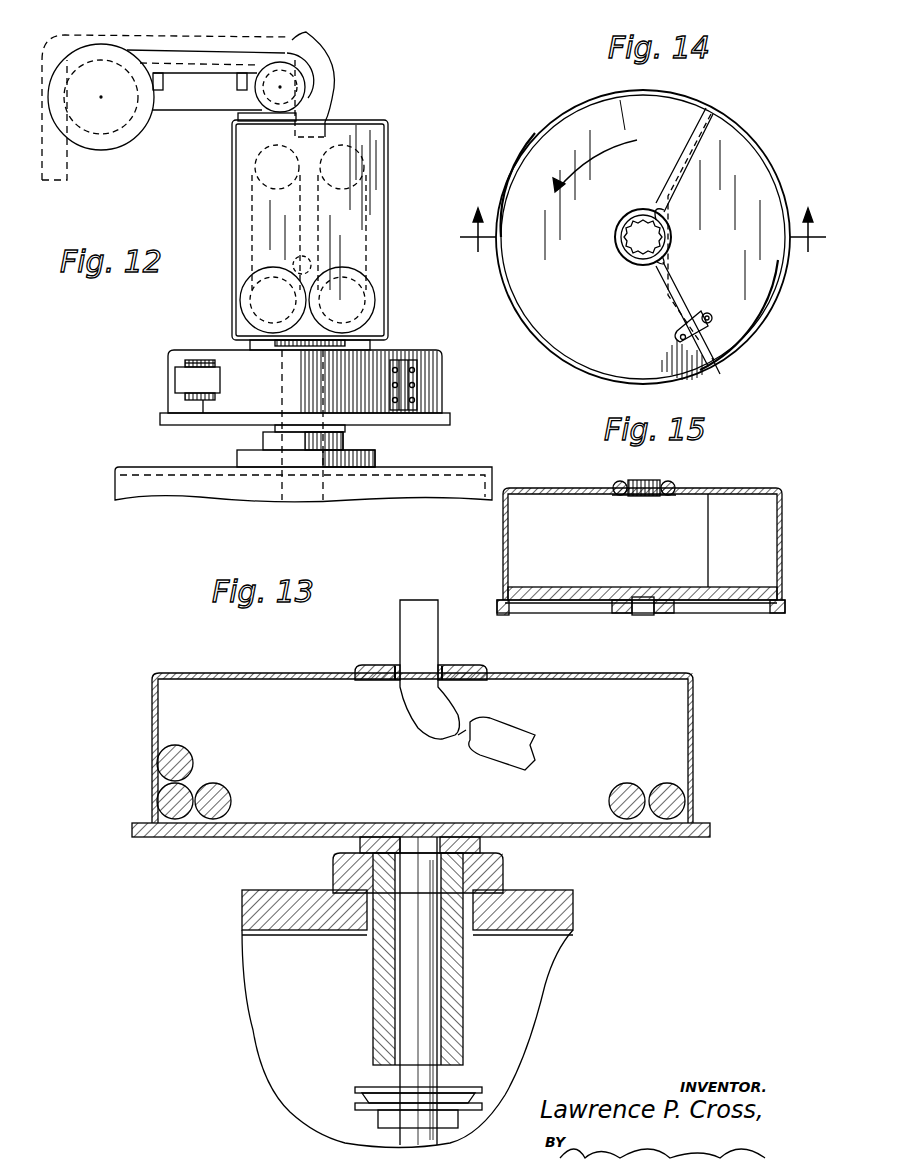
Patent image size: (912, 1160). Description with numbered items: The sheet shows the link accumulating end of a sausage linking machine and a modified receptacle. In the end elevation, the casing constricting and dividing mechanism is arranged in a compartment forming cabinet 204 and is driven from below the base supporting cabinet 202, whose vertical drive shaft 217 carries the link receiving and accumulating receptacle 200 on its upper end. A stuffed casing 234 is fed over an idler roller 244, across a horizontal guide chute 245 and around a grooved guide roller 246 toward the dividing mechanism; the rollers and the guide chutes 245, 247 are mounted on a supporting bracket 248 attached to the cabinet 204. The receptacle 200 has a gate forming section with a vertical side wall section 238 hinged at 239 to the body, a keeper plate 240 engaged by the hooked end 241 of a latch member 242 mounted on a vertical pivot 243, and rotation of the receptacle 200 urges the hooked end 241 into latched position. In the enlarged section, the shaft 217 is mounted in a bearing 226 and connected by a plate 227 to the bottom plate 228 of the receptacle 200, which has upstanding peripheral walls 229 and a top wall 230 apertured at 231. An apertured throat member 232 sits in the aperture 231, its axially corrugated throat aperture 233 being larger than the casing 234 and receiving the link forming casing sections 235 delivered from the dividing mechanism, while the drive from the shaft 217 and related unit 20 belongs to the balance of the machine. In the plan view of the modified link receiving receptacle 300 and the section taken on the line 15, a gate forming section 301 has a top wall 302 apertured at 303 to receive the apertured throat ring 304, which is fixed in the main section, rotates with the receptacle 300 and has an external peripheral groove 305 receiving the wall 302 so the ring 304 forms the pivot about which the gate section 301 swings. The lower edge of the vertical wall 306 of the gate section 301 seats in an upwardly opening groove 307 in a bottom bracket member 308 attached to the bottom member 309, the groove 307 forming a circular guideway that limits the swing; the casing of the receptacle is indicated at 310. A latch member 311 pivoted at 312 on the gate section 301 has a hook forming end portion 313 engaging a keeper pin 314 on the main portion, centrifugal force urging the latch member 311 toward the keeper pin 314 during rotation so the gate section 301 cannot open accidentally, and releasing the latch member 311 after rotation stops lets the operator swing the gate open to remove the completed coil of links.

In FIG. 12, the conveyor unit 20' 20 is at (386, 225).
In FIG. 13, the link receiving and accumulating receptacle 200 is at (588, 690).
In FIG. 12, the base supporting cabinet 202 is at (140, 467).
In FIG. 12, the compartment forming casing or cabinet 204 is at (386, 140).
In FIG. 13, the vertical drive shaft 217 is at (430, 972).
In FIG. 13, the bearing 226 is at (382, 1003).
In FIG. 13, the plate 227 is at (345, 850).
In FIG. 13, the bottom plate 228 is at (242, 837).
In FIG. 13, the upstanding peripheral walls 229 is at (152, 728).
In FIG. 13, the top wall 230 is at (236, 673).
In FIG. 13, the top central aperture 231 is at (382, 686).
In FIG. 13, the apertured throat member 232 is at (363, 665).
In FIG. 13, the throat or aperture 233 is at (448, 665).
In FIG. 12, the stuffed casing 234 is at (68, 177).
In FIG. 13, the link forming casing sections 235 is at (426, 604).
In FIG. 12, the vertical side wall section 238 is at (378, 365).
In FIG. 12, the hinge connection 239 is at (418, 380).
In FIG. 12, the keeper plate 240 is at (204, 360).
In FIG. 12, the hooked end 241 is at (215, 385).
In FIG. 12, the latch member 242 is at (180, 383).
In FIG. 12, the vertical pivot 243 is at (185, 363).
In FIG. 12, the idler roller 244 is at (130, 128).
In FIG. 12, the horizontal guide chute 245 is at (202, 52).
In FIG. 12, the grooved guide roller 246 is at (307, 67).
In FIG. 12, the guide chute 247 is at (332, 92).
In FIG. 12, the supporting bracket 248 is at (191, 110).
In FIG. 14, the link receiving receptacle 300 is at (572, 128).
In FIG. 14, the gate forming section 301 is at (735, 160).
In FIG. 15, the top wall 302 is at (740, 488).
In FIG. 15, the aperture 303 is at (672, 480).
In FIG. 14, the apertured throat ring 304 is at (618, 254).
In FIG. 15, the apertured throat ring 304 is at (634, 480).
In FIG. 15, the external peripheral groove 305 is at (612, 486).
In FIG. 15, the vertical wall 306 is at (782, 548).
In FIG. 14, the upwardly opening groove 307 is at (522, 160).
In FIG. 15, the upwardly opening groove 307 is at (783, 613).
In FIG. 14, the bottom bracket member 308 is at (754, 338).
In FIG. 15, the bottom bracket member 308 is at (762, 613).
In FIG. 15, the bottom member 309 is at (738, 588).
In FIG. 15, the casing 310 is at (503, 538).
In FIG. 14, the latch member 311 is at (692, 330).
In FIG. 14, the pivot 312 is at (709, 312).
In FIG. 14, the hook forming end portion 313 is at (676, 342).
In FIG. 14, the keeper pin 314 is at (722, 366).
In FIG. 14, the section line 15— 15 is at (643, 242).